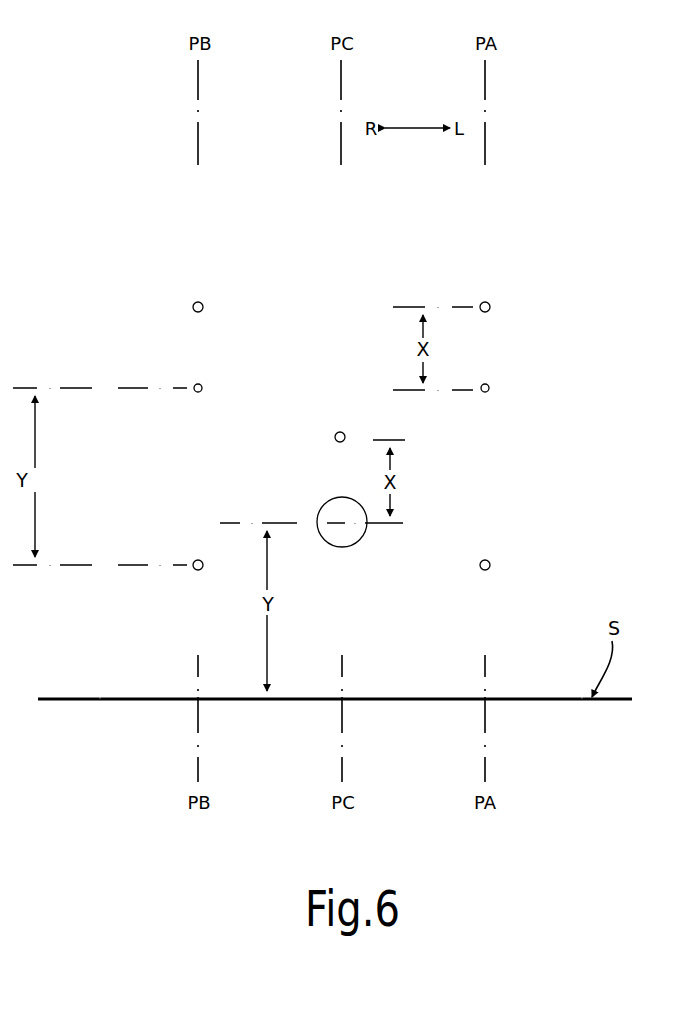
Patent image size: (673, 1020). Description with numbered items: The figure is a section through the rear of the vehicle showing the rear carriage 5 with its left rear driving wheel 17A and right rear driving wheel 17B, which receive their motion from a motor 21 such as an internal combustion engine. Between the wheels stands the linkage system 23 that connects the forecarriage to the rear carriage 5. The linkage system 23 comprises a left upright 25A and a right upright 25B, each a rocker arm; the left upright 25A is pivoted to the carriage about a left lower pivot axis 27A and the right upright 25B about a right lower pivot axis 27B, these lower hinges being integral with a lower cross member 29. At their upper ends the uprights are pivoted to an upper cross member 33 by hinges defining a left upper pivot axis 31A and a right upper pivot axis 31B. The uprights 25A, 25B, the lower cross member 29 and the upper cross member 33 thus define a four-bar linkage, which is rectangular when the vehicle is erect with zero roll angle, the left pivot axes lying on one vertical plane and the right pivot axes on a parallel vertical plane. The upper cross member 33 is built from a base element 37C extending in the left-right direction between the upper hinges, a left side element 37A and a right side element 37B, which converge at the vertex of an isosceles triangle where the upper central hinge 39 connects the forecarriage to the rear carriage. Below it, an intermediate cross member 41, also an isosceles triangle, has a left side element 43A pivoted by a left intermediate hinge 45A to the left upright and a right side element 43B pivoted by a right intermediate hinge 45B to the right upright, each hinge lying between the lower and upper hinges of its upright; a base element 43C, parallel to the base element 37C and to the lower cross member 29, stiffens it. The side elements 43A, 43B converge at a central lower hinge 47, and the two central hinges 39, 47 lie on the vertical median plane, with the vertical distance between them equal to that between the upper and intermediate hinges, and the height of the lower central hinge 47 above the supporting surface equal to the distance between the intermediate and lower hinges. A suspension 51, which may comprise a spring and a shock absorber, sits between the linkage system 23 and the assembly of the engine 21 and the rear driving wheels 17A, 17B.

The rear carriage 5 is at (503, 215).
The left rear driving wheel 17A is at (545, 332).
The right rear driving wheel 17B is at (141, 316).
The motor 21 is at (363, 273).
The linkage system 23 is at (493, 284).
The left upright 25A is at (487, 487).
The right upright 25B is at (197, 450).
The left lower pivot axis 27A is at (488, 563).
The right lower pivot axis 27B is at (195, 566).
The lower cross member 29 is at (328, 566).
The left upper pivot axis 31A is at (490, 303).
The right upper pivot axis 31B is at (200, 303).
The upper cross member 33 is at (262, 300).
The left side element 37A is at (457, 338).
The right side element 37B is at (222, 333).
The base element 37C is at (310, 305).
The upper central hinge 39 is at (337, 437).
The intermediate cross member 41 is at (245, 455).
The left side element 43A is at (457, 415).
The right side element 43B is at (227, 415).
The base element 43C is at (367, 388).
The left intermediate hinge 45A is at (488, 386).
The right intermediate hinge 45B is at (187, 389).
The central lower hinge 47 is at (352, 537).
The suspension 51 is at (330, 467).